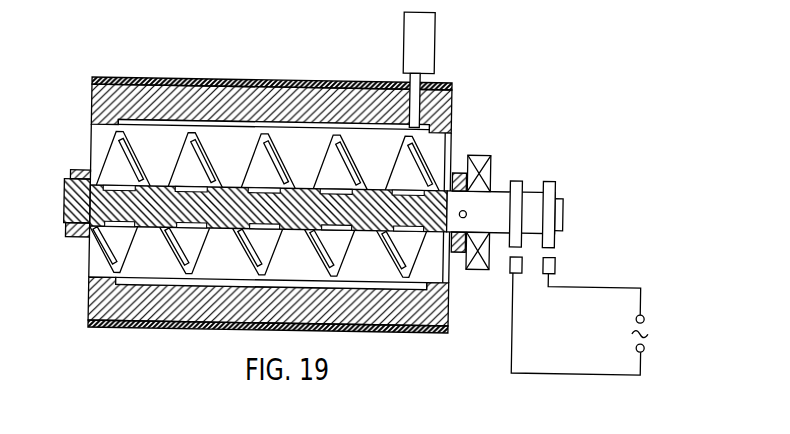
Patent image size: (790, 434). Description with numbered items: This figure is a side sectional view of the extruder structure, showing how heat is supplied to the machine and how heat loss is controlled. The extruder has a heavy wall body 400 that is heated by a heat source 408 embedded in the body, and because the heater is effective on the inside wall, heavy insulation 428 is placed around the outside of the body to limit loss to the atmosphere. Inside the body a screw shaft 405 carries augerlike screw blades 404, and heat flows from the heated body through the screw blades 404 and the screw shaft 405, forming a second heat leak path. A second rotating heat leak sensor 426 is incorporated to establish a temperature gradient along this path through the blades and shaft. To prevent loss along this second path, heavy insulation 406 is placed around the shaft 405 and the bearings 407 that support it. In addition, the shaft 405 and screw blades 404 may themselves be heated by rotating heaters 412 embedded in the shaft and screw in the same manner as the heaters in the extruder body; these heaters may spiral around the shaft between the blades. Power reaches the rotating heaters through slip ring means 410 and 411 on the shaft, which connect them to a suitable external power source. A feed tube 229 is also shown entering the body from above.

The heavy wall body 400 is at (220, 99).
The heavy insulation 428 is at (90, 80).
The heat source 408 is at (296, 92).
The rotating heaters 412 is at (179, 188).
The screw blades 404 is at (189, 257).
The screw shaft 405 is at (88, 241).
The feed tube 229 is at (428, 37).
The heavy insulation 406 is at (456, 169).
The bearings 407 is at (487, 153).
The slip ring means 411 is at (519, 178).
The second rotating heat leak sensor 426 is at (467, 212).
The slip ring means 410 is at (546, 271).